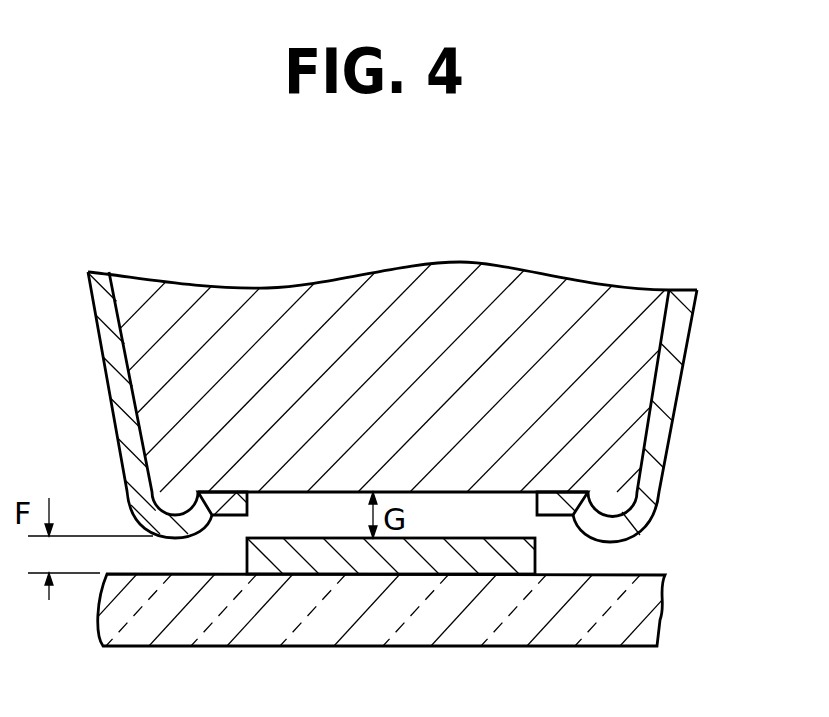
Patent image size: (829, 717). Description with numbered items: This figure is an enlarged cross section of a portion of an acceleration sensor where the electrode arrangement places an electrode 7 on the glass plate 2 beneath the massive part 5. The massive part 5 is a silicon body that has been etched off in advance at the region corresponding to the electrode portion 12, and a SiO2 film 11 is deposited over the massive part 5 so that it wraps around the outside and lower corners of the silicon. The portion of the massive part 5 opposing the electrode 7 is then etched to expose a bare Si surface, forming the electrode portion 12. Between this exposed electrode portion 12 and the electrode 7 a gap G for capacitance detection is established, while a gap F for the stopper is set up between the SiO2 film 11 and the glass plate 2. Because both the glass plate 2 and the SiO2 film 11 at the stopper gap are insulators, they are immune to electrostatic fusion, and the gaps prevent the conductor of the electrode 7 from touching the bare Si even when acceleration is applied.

The glass plate 2 is at (175, 610).
The massive part 5 is at (524, 287).
The electrode 7 is at (496, 563).
The SiO2 film 11 is at (662, 418).
The electrode portion 12 is at (307, 493).